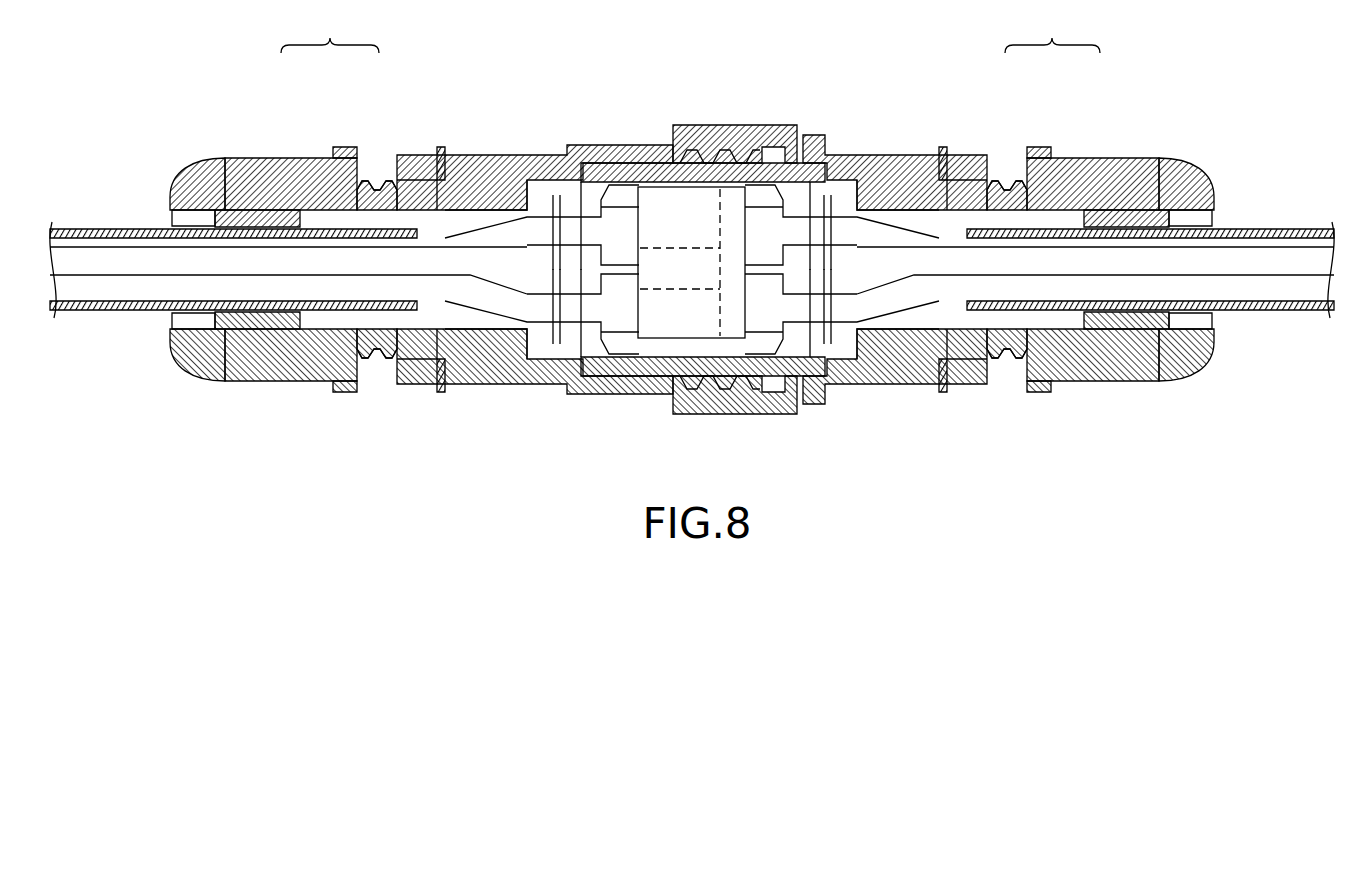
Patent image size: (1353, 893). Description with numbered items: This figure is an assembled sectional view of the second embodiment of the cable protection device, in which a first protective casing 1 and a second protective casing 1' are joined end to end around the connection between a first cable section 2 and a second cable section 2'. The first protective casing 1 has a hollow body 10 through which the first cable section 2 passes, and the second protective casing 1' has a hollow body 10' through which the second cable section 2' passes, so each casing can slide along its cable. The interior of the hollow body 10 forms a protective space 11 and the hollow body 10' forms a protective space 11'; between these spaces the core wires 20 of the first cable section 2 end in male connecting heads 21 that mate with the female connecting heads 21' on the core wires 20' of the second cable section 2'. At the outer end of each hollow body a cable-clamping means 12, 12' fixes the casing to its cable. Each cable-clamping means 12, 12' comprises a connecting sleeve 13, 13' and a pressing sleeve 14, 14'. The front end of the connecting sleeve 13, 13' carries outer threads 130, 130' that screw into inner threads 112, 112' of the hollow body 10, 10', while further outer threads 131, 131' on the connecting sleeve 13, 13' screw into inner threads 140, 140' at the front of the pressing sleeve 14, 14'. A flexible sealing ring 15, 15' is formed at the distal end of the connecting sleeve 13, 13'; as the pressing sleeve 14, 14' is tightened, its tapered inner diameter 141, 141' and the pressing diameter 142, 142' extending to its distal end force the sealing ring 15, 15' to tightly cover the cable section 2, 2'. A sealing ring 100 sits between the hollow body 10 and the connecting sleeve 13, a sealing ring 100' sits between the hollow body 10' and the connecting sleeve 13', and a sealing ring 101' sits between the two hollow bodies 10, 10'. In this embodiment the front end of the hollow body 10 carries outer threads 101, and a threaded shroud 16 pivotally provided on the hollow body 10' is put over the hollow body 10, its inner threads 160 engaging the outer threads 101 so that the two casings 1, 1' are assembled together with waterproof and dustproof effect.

The first protective casing 1 is at (497, 62).
The second protective casing 1' is at (934, 62).
The first cable section 2 is at (288, 220).
The second cable section 2' is at (1095, 219).
The hollow body 10 is at (535, 134).
The hollow body 10' is at (895, 137).
The protective space 11 is at (535, 394).
The protective space 11' is at (871, 397).
The cable-clamping means 12 is at (330, 32).
The cable-clamping means 12' is at (1052, 31).
The connecting sleeve 13 is at (372, 205).
The connecting sleeve 13' is at (1015, 205).
The pressing sleeve 14 is at (291, 216).
The pressing sleeve 14' is at (1093, 216).
The flexible sealing ring 15 is at (193, 325).
The flexible sealing ring 15' is at (1195, 325).
The threaded shroud 16 is at (745, 125).
The core wires 20 is at (542, 315).
The core wires 20' is at (842, 315).
The connecting heads 21 is at (684, 327).
The connecting heads 21' is at (735, 424).
The sealing ring 100 is at (415, 225).
The sealing ring 100' is at (974, 225).
The outer threads 101 is at (692, 155).
The sealing ring 101' is at (692, 371).
The inner threads 112 is at (485, 323).
The inner threads 112' is at (905, 322).
The outer threads 130 is at (419, 303).
The outer threads 130' is at (971, 303).
The outer threads 131 is at (380, 326).
The outer threads 131' is at (1008, 325).
The inner threads 140 is at (329, 315).
The inner threads 140' is at (1057, 315).
The tapered inner diameter 141 is at (257, 217).
The tapered inner diameter 141' is at (1122, 218).
The pressing diameter 142 is at (172, 287).
The pressing diameter 142' is at (1215, 286).
The inner threads 160 is at (712, 125).